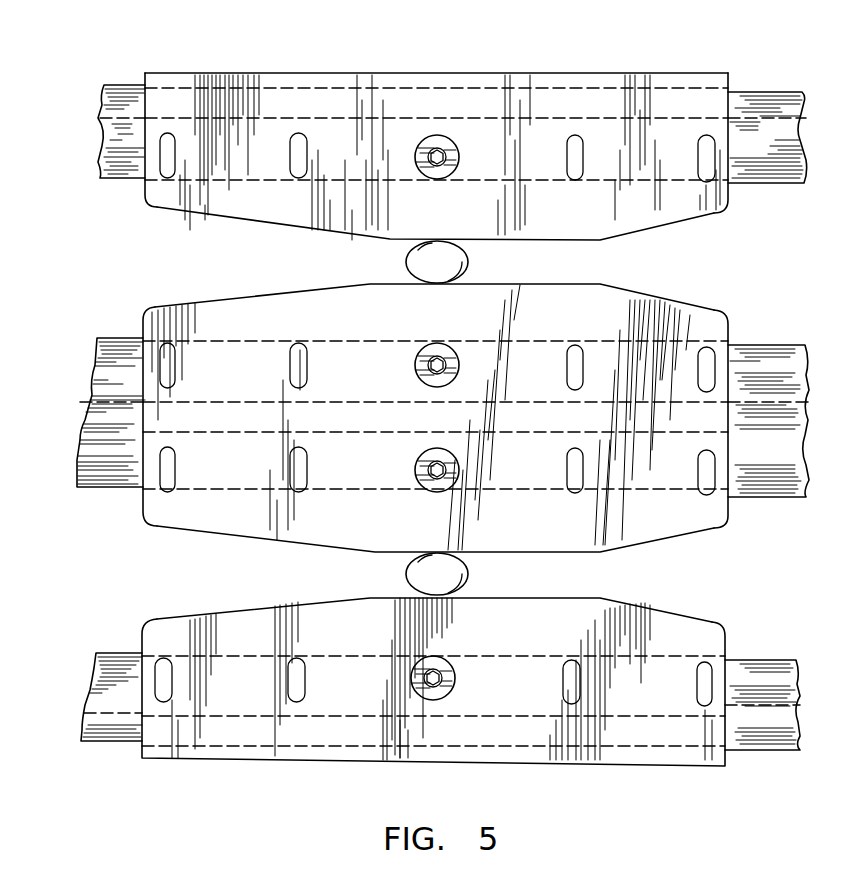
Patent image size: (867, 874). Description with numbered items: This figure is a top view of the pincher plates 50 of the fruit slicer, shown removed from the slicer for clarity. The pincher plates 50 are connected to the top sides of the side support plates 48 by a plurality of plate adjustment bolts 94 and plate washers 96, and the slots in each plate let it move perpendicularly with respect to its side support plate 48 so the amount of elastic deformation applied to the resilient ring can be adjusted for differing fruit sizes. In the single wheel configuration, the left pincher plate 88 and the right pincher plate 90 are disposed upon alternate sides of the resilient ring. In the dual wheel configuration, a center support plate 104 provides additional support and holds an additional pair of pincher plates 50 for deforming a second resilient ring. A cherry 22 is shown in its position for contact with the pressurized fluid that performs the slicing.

The cherry 22 is at (462, 583).
The side support plates 48 is at (771, 190).
The pincher plates 50 is at (86, 768).
The left pincher plate 88 is at (203, 213).
The right pincher plate 90 is at (218, 300).
The plate adjustment bolts 94 is at (448, 683).
The plate washers 96 is at (427, 688).
The center support plate 104 is at (757, 498).